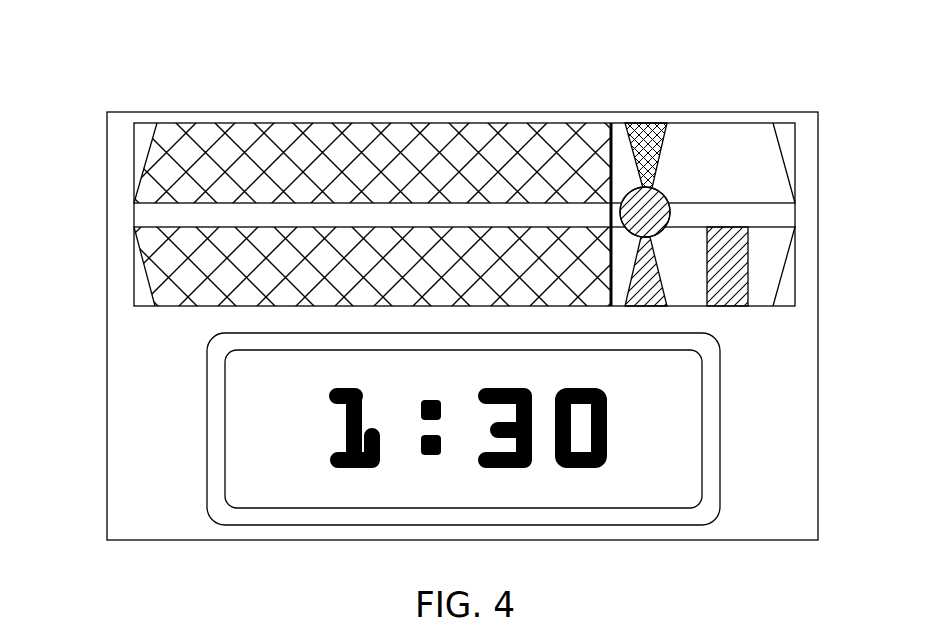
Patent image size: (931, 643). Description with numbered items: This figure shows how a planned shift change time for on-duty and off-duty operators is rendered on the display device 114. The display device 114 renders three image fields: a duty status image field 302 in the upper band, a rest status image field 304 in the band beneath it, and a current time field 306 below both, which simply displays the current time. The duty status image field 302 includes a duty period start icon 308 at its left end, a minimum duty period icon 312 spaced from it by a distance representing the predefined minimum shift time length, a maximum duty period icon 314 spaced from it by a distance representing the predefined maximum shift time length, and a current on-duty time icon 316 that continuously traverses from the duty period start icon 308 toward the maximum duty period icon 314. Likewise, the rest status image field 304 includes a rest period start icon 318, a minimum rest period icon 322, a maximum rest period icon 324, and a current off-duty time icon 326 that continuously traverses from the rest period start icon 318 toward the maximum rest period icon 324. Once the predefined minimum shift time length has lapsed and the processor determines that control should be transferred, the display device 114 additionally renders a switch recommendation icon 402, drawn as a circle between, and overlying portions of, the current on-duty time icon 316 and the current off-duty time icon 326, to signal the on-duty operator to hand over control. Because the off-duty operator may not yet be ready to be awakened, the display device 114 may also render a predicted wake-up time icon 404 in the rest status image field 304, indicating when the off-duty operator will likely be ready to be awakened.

The display device 114 is at (110, 92).
The duty status image field 302 is at (128, 171).
The rest status image field 304 is at (128, 268).
The current time field 306 is at (202, 512).
The duty period start icon 308 is at (145, 131).
The minimum duty period icon 312 is at (597, 131).
The maximum duty period icon 314 is at (787, 131).
The current on-duty time icon 316 is at (650, 131).
The rest period start icon 318 is at (143, 307).
The minimum rest period icon 322 is at (610, 280).
The maximum rest period icon 324 is at (787, 297).
The current off-duty time icon 326 is at (648, 297).
The switch recommendation icon 402 is at (657, 188).
The predicted wake-up time icon 404 is at (727, 233).